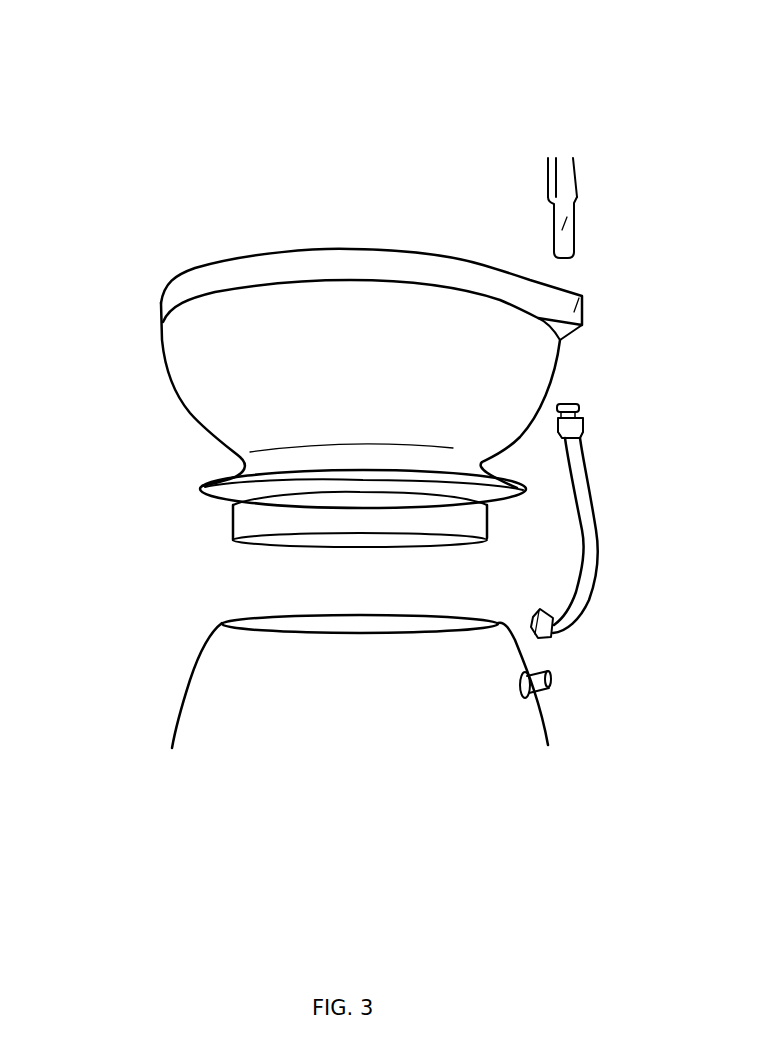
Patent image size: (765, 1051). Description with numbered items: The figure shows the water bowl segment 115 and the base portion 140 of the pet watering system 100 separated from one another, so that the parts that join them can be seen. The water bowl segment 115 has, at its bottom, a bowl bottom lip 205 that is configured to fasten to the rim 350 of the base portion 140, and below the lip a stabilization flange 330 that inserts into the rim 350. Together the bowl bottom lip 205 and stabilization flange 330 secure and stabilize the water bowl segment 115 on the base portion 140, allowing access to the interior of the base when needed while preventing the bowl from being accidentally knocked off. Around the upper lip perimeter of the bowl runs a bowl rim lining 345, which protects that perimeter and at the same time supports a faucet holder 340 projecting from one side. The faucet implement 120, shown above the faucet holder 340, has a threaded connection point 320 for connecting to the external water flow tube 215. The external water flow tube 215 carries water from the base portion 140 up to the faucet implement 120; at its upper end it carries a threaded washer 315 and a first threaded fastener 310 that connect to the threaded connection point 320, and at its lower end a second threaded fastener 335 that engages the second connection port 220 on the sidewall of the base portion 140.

The pet watering system 100 is at (265, 150).
The water bowl segment 115 is at (195, 350).
The faucet implement 120 is at (552, 203).
The base portion 140 is at (267, 700).
The bowl bottom lip 205 is at (203, 488).
The external water flow tube 215 is at (593, 566).
The second connection port 220 is at (550, 670).
The first threaded fastener 310 is at (577, 208).
The threaded washer 315 is at (580, 400).
The threaded connection point 320 is at (583, 422).
The stabilization flange 330 is at (245, 520).
The second threaded fastener 335 is at (533, 614).
The faucet holder 340 is at (580, 296).
The bowl rim lining 345 is at (185, 277).
The rim 350 is at (222, 623).